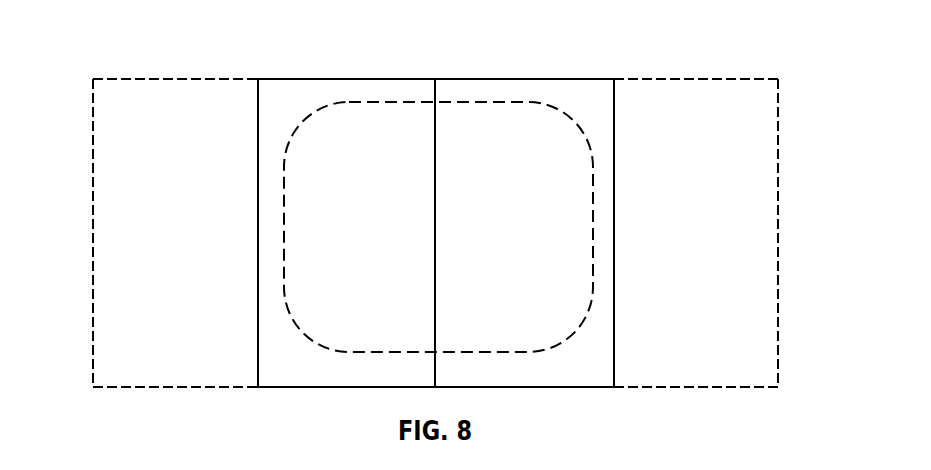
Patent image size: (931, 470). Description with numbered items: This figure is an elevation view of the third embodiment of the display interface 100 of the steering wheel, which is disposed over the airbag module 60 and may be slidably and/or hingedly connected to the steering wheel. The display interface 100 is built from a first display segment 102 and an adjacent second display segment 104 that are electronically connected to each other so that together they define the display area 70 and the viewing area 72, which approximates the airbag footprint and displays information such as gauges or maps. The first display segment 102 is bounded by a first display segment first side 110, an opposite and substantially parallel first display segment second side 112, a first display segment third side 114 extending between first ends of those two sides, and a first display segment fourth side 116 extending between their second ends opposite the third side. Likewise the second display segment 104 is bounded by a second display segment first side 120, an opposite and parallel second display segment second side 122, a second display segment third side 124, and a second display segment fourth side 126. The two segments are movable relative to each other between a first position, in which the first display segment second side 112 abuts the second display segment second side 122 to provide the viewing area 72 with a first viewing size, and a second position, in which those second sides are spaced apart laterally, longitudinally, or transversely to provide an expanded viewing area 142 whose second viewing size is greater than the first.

The airbag module 60 is at (593, 282).
The display area 70 is at (280, 98).
The viewing area 72 is at (302, 233).
The display interface 100 is at (437, 66).
The first display segment 102 is at (197, 64).
The second display segment 104 is at (516, 66).
The first display segment first side 110 is at (92, 202).
The first display segment second side 112 is at (435, 134).
The first display segment third side 114 is at (157, 78).
The first display segment fourth side 116 is at (150, 388).
The second display segment first side 120 is at (614, 128).
The second display segment second side 122 is at (436, 165).
The second display segment third side 124 is at (550, 78).
The second display segment fourth side 126 is at (550, 388).
The expanded viewing area 142 is at (115, 127).